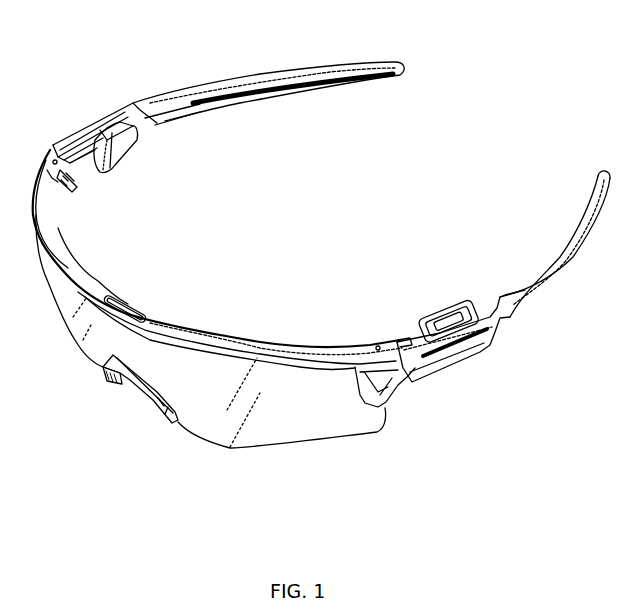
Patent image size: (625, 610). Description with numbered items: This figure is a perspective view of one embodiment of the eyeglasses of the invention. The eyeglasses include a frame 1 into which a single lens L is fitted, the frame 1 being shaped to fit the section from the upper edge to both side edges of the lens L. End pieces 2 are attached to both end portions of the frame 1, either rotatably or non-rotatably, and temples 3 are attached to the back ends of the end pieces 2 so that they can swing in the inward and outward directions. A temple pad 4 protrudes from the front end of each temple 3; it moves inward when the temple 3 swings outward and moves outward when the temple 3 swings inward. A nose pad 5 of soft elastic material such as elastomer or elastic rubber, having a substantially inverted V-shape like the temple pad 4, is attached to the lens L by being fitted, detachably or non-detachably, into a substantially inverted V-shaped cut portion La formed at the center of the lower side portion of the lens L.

The frame 1 is at (97, 278).
The end pieces 2 is at (78, 130).
The temples 3 is at (267, 63).
The temple pad 4 is at (132, 150).
The nose pad 5 is at (157, 395).
The lens L is at (293, 425).
The cut portion La is at (128, 393).